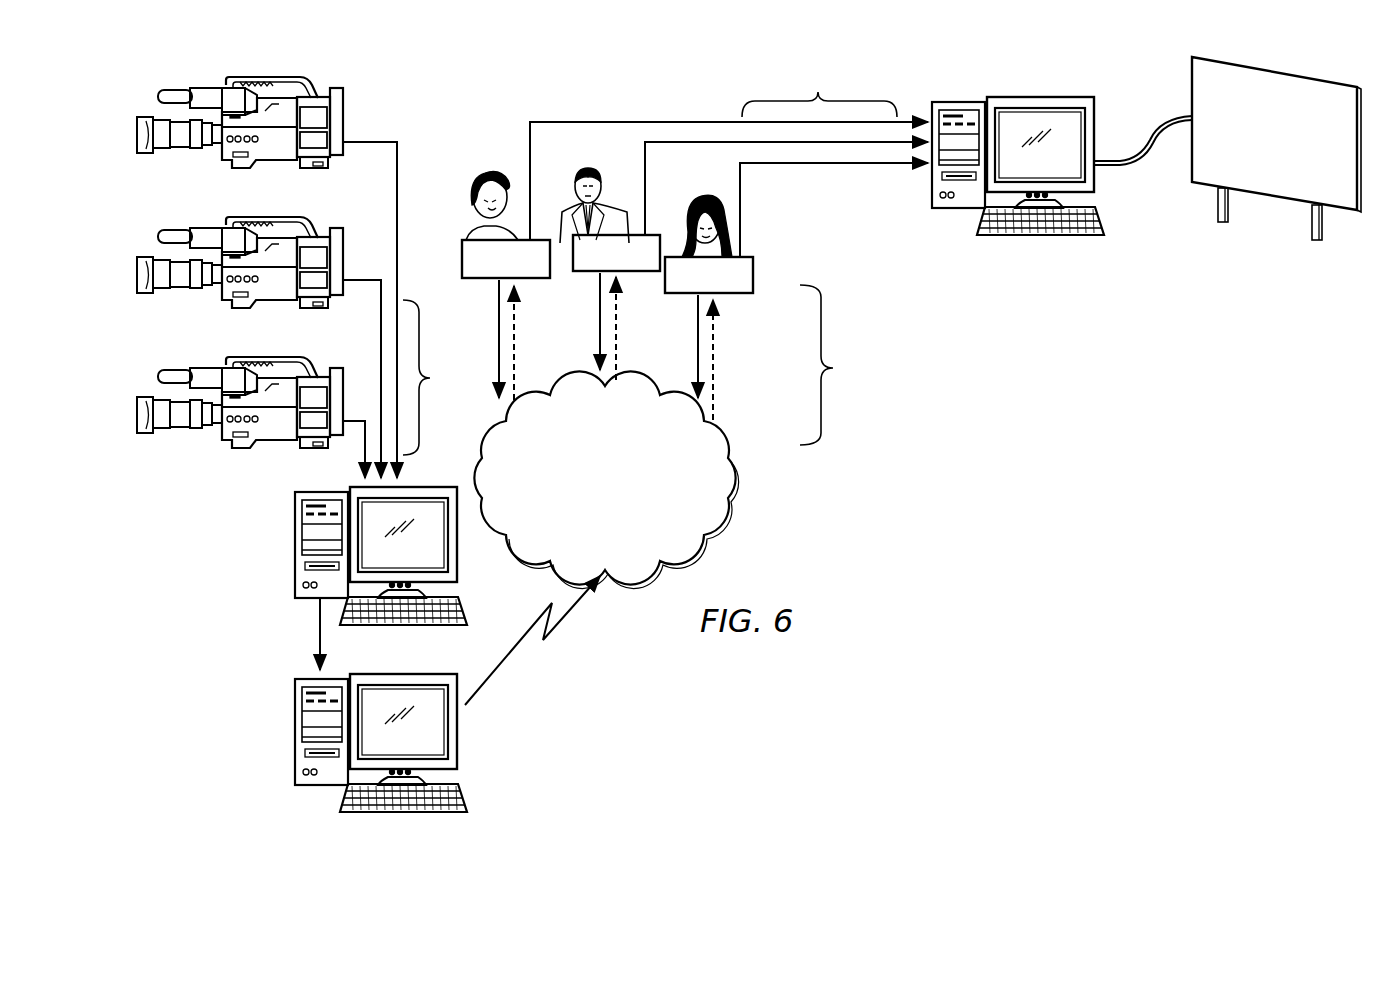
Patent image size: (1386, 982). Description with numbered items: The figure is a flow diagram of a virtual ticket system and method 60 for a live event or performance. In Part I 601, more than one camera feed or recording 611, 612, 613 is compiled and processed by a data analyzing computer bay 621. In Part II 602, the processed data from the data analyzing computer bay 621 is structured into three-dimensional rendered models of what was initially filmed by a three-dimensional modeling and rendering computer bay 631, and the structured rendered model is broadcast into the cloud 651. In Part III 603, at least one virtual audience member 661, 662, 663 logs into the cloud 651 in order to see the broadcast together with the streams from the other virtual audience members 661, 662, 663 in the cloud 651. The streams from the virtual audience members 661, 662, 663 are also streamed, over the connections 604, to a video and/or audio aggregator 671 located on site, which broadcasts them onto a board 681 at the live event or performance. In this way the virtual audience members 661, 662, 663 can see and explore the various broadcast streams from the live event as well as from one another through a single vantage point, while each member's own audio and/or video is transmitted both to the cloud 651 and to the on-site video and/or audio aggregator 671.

The video production system 60 is at (920, 527).
The Part I 601 is at (434, 377).
The Part II 602 is at (318, 628).
The Part III 603 is at (831, 365).
The connections to production computer 604 is at (819, 92).
The camera feed/recording 611 is at (233, 170).
The camera feed/recording 612 is at (233, 310).
The video camera 613 is at (233, 450).
The data analyzing computer bay 621 is at (297, 532).
The 3D modeling and rendering computer bay 631 is at (297, 718).
The cloud 651 is at (606, 479).
The virtual audience member 661 is at (482, 284).
The virtual audience member 662 is at (590, 274).
The virtual audience member 663 is at (748, 296).
The video and/or audio aggregator 671 is at (960, 207).
The board 681 is at (1228, 148).